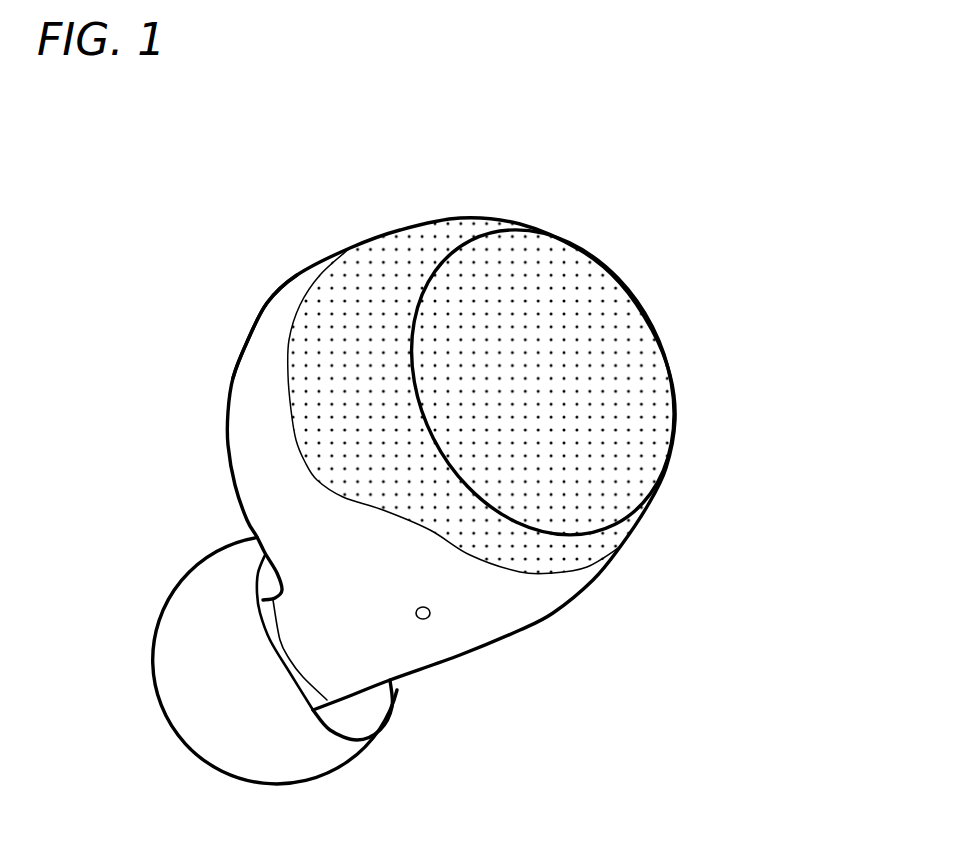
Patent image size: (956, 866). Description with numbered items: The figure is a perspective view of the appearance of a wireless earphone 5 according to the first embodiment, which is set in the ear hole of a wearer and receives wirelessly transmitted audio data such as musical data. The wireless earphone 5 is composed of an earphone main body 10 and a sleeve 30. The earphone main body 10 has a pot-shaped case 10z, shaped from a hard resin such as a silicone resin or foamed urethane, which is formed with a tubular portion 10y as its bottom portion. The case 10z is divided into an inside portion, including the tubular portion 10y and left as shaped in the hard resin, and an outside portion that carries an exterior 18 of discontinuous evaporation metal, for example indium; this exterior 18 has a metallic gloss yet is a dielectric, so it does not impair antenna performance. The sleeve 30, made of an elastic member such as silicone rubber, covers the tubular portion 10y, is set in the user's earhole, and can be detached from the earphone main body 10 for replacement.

The wireless earphone 5 is at (705, 165).
The earphone main body 10 is at (547, 617).
The tubular portion 10y is at (335, 683).
The case 10z is at (257, 347).
The exterior 18 is at (617, 550).
The sleeve 30 is at (163, 655).